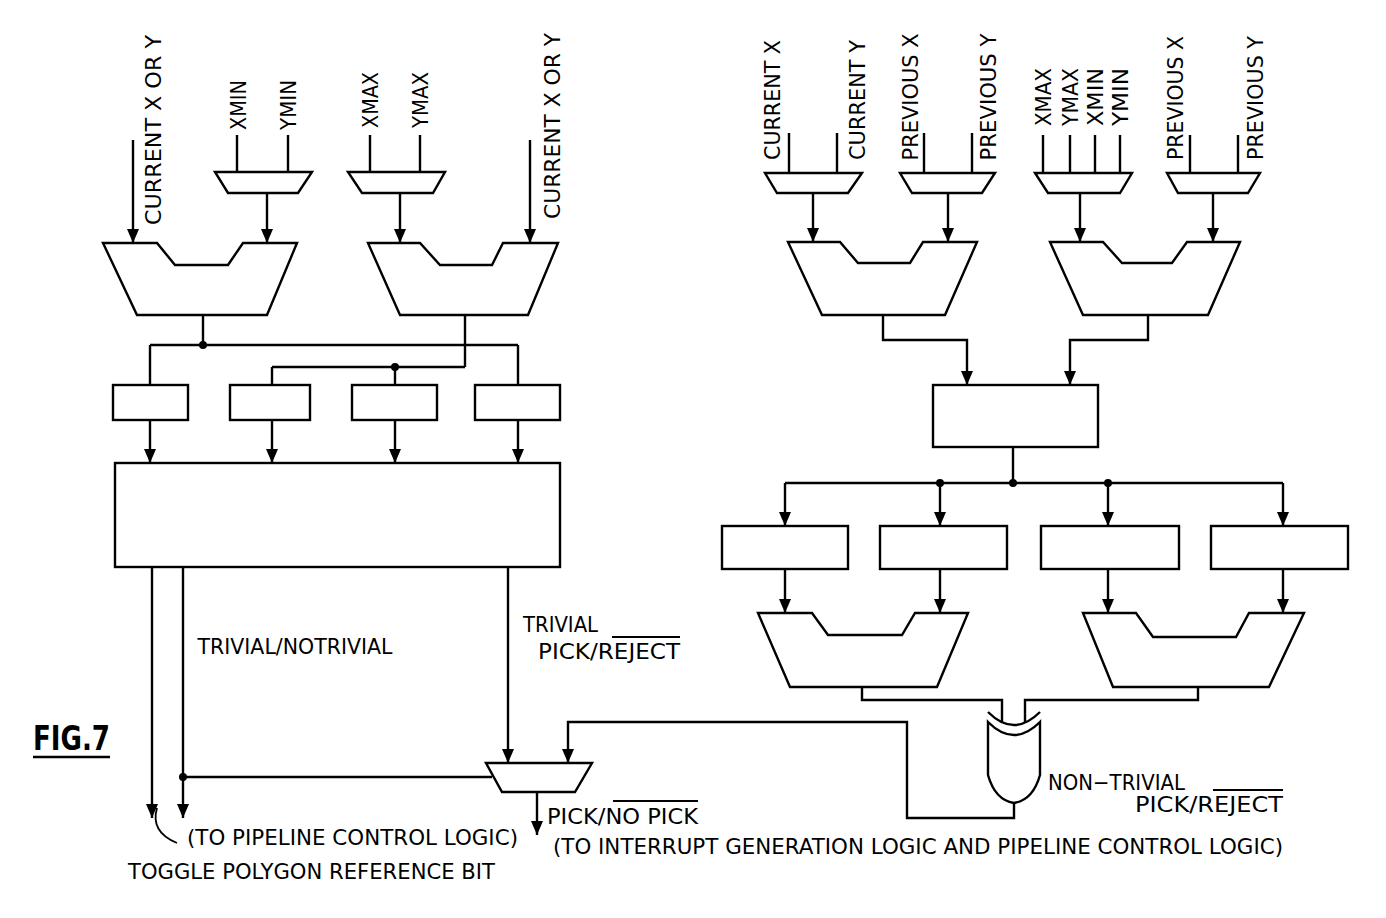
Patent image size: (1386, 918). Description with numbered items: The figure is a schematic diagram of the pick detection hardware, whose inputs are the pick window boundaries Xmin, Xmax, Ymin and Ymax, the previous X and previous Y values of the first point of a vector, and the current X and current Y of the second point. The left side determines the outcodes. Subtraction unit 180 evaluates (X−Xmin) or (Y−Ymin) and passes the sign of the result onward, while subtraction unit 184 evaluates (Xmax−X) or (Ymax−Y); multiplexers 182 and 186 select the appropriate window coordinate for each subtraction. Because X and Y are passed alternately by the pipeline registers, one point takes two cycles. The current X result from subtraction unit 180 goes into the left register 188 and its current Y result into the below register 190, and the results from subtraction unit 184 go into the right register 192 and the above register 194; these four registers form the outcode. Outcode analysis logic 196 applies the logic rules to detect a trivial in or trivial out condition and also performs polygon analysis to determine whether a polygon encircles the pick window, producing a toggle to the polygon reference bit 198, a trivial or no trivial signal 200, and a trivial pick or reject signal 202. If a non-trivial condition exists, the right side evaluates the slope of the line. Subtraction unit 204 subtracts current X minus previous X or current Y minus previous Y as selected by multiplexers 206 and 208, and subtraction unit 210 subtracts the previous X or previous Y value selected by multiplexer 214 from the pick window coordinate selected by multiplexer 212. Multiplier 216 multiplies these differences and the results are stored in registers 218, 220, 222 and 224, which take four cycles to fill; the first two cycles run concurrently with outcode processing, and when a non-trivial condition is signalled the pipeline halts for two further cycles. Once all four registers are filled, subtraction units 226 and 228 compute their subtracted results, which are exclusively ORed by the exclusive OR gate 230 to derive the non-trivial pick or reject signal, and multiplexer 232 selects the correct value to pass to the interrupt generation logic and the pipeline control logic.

The subtraction unit 180 is at (118, 277).
The multiplexer 182 is at (218, 185).
The subtraction unit 184 is at (385, 283).
The multiplexer 186 is at (355, 182).
The left register 188 is at (135, 383).
The below register 190 is at (540, 385).
The right register 192 is at (255, 385).
The above register 194 is at (375, 422).
The outcode analysis logic 196 is at (560, 505).
The toggle to the polygon reference bit 198 is at (153, 605).
The trivial or no trivial signal 200 is at (185, 617).
The trivial pick or reject signal 202 is at (512, 605).
The subtraction unit 204 is at (814, 300).
The multiplexer 206 is at (768, 180).
The multiplexer 208 is at (903, 180).
The subtraction unit 210 is at (1070, 287).
The multiplexer 212 is at (1038, 180).
The multiplexer 214 is at (1168, 180).
The multiplier 216 is at (932, 415).
The register 218 is at (722, 548).
The register 220 is at (915, 525).
The register 222 is at (1078, 527).
The register 224 is at (1253, 527).
The subtraction unit 226 is at (778, 658).
The subtraction unit 228 is at (1092, 630).
The exclusive OR 230 is at (988, 745).
The multiplexer 232 is at (592, 780).